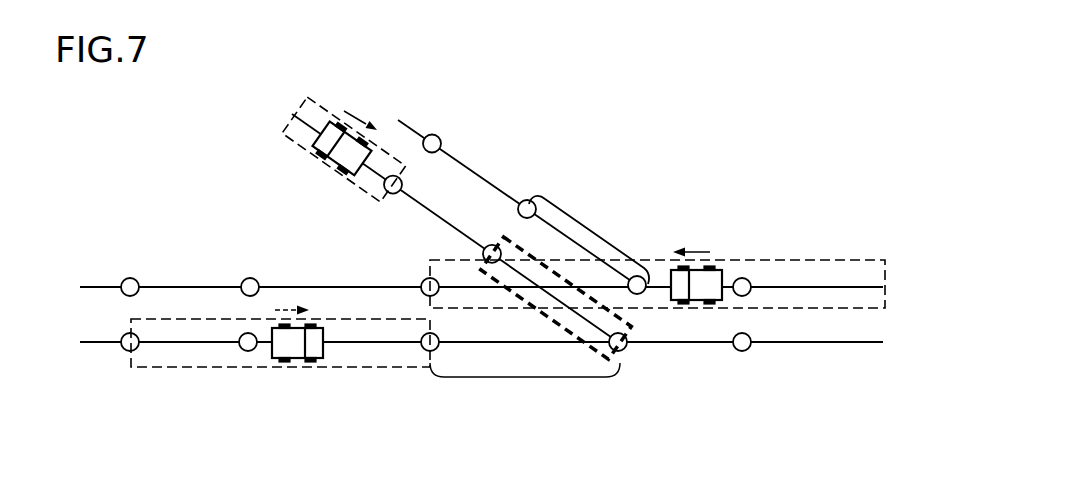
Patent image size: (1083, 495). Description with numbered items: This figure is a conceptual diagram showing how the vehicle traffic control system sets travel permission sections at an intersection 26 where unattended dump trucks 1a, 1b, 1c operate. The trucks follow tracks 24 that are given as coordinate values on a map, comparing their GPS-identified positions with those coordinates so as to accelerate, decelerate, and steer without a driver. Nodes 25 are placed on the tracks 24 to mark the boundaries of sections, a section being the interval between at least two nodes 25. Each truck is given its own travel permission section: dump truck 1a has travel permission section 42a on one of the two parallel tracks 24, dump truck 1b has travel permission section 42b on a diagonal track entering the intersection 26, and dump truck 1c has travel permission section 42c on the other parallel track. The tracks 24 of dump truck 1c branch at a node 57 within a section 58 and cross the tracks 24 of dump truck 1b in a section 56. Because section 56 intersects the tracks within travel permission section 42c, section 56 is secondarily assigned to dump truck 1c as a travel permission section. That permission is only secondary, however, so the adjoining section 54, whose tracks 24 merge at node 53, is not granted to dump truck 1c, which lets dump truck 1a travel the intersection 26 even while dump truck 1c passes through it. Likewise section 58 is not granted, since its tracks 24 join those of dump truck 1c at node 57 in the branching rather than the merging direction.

The dump truck 1a is at (292, 361).
The dump truck 1b is at (330, 165).
The dump truck 1c is at (717, 269).
The tracks 24 is at (485, 178).
The nodes 25 is at (526, 198).
The intersection 26 is at (602, 418).
The travel permission section 42a is at (338, 368).
The travel permission section 42b is at (288, 138).
The travel permission section 42c is at (812, 260).
The node 53 is at (625, 349).
The section 54 is at (525, 377).
The section 56 is at (630, 319).
The node 57 is at (647, 283).
The section 58 is at (593, 228).